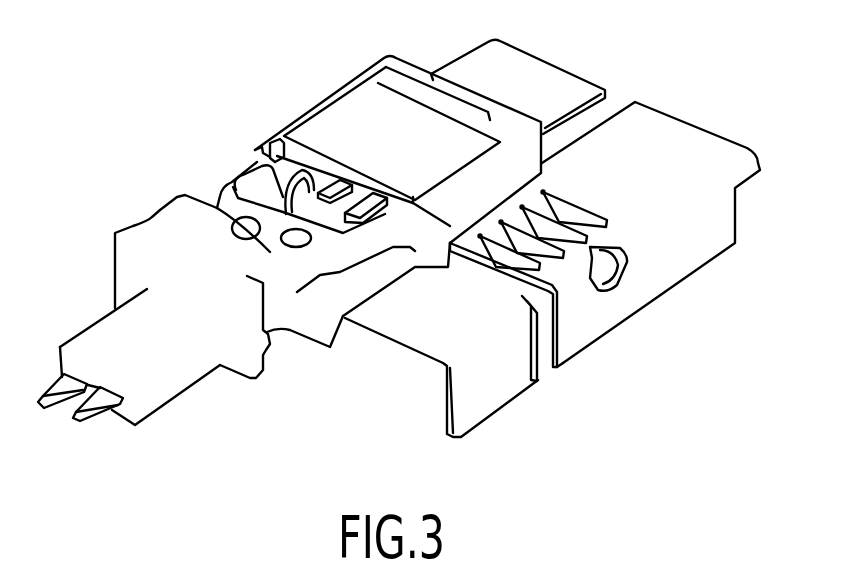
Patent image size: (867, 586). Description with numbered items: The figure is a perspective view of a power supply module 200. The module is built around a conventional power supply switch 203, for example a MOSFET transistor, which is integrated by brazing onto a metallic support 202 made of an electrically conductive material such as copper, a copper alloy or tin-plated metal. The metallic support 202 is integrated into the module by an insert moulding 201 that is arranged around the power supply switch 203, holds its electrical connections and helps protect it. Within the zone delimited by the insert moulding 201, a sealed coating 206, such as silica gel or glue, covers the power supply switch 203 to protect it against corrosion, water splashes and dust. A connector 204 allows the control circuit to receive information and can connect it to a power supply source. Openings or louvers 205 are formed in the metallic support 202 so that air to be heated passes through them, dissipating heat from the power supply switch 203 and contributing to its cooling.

The power supply module 200 is at (147, 190).
The insert moulding 201 is at (488, 112).
The metallic support 202 is at (630, 277).
The power supply switch 203 is at (347, 118).
The connector 204 is at (160, 380).
The openings or louvers 205 is at (572, 214).
The sealed coating 206 is at (300, 200).